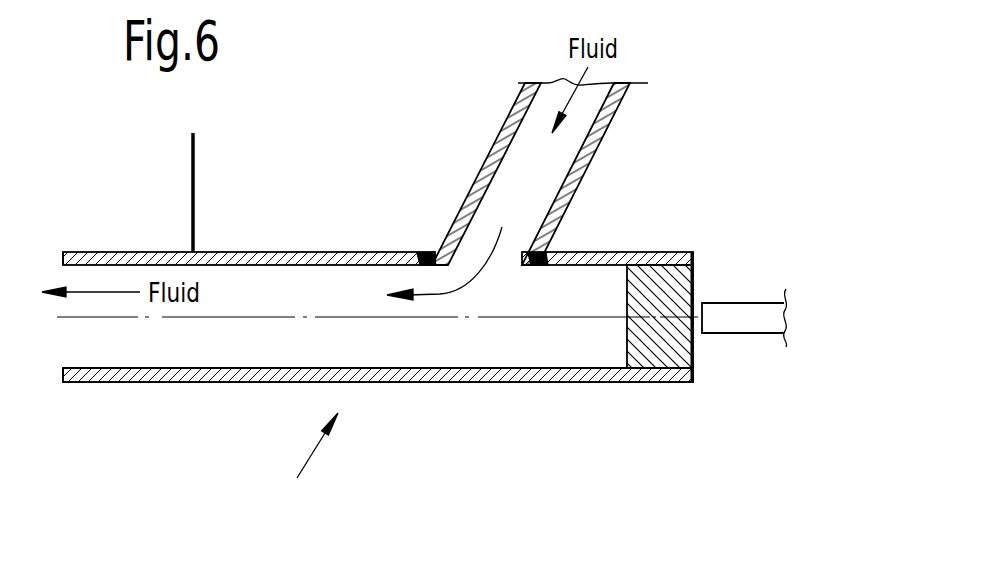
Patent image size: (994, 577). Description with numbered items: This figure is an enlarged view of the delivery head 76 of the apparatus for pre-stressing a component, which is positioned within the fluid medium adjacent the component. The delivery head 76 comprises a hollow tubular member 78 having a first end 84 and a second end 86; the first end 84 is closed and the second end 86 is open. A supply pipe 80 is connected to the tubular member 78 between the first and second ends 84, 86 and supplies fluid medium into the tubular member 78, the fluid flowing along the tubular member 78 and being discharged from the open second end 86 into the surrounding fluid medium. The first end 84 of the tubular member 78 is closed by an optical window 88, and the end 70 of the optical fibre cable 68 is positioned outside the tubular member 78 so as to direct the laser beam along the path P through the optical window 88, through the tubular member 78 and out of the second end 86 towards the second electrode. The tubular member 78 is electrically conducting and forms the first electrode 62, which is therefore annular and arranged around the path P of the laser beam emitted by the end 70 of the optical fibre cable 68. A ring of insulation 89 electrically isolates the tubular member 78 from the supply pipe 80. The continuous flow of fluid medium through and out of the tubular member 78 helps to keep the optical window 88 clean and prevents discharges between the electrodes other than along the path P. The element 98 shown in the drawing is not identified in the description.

The first electrode 62 is at (262, 383).
The optical fibre cable 68 is at (770, 328).
The end of the optical fibre cable 70 is at (739, 312).
The delivery head 76 is at (304, 462).
The hollow tubular member 78 is at (318, 252).
The supply pipe 80 is at (568, 198).
The first end 84 is at (673, 383).
The second end 86 is at (63, 376).
The optical window 88 is at (657, 285).
The ring of insulation 89 is at (426, 252).
The sensor 98 is at (195, 185).
The path of the laser beam P is at (200, 318).